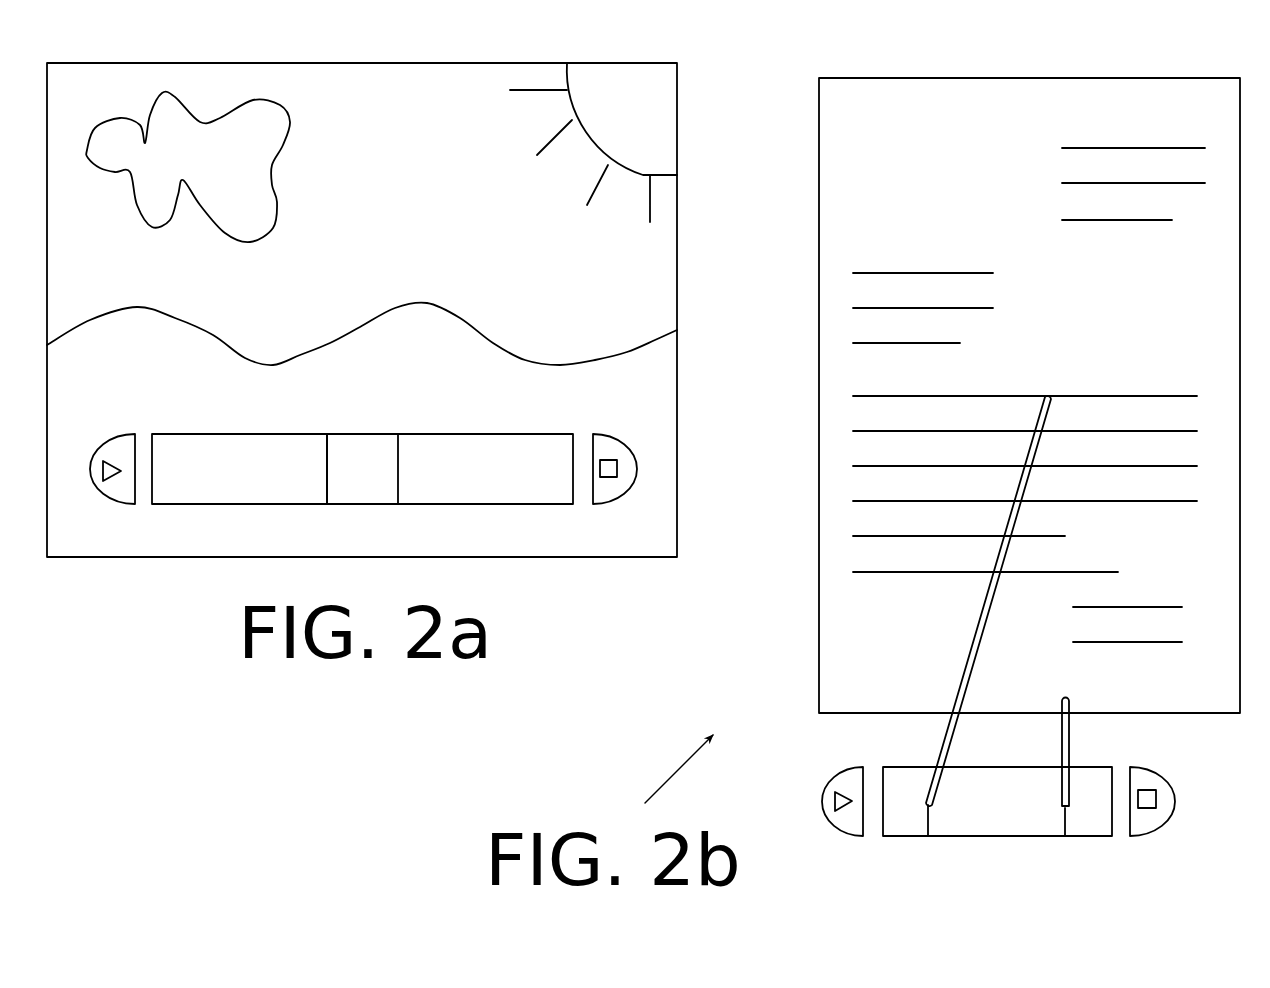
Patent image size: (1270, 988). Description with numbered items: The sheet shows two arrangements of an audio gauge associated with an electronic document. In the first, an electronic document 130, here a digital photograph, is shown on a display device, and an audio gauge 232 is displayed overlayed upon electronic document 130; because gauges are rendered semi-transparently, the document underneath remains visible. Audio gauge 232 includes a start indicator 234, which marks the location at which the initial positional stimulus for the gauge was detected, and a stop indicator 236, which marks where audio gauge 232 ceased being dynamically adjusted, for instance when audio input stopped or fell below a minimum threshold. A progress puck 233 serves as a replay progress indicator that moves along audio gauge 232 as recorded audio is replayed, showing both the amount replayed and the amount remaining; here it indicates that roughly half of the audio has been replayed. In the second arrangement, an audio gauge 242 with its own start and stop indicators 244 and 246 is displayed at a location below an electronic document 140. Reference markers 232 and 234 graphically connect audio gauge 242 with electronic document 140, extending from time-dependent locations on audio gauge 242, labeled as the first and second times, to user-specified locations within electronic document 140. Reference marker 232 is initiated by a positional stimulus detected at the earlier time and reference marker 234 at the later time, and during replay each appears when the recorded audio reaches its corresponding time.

In FIG. 2a, the electronic document 130 is at (275, 60).
In FIG. 2b, the electronic document 140 is at (997, 72).
In FIG. 2a, the audio gauge / reference marker 232 is at (260, 510).
In FIG. 2b, the audio gauge / reference marker 232 is at (939, 740).
In FIG. 2a, the progress puck 233 is at (364, 432).
In FIG. 2a, the start indicator / reference marker 234 is at (120, 503).
In FIG. 2b, the start indicator / reference marker 234 is at (1072, 740).
In FIG. 2a, the stop indicator 236 is at (610, 504).
In FIG. 2b, the audio gauge 242 is at (1006, 843).
In FIG. 2b, the start indicator 244 is at (843, 833).
In FIG. 2b, the stop indicator 246 is at (1150, 833).